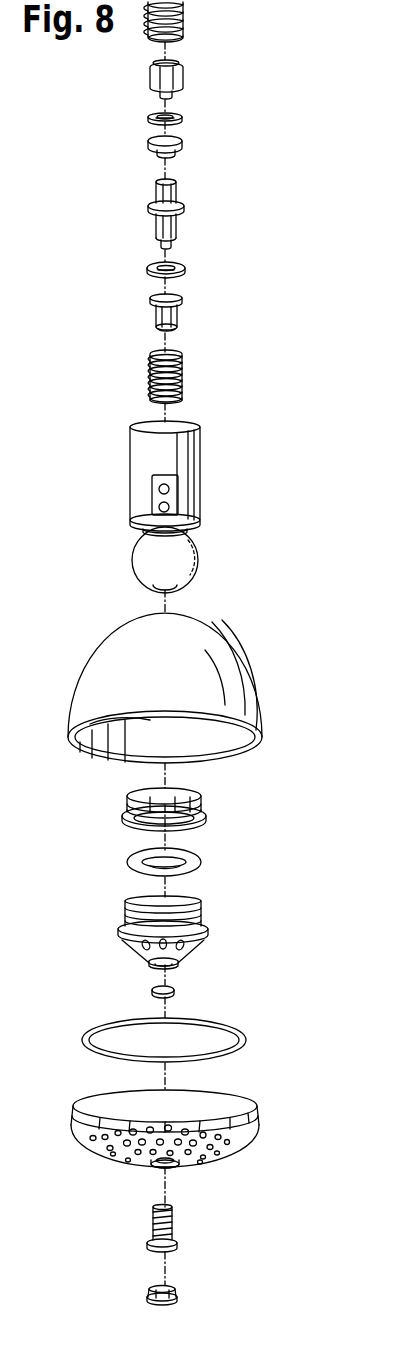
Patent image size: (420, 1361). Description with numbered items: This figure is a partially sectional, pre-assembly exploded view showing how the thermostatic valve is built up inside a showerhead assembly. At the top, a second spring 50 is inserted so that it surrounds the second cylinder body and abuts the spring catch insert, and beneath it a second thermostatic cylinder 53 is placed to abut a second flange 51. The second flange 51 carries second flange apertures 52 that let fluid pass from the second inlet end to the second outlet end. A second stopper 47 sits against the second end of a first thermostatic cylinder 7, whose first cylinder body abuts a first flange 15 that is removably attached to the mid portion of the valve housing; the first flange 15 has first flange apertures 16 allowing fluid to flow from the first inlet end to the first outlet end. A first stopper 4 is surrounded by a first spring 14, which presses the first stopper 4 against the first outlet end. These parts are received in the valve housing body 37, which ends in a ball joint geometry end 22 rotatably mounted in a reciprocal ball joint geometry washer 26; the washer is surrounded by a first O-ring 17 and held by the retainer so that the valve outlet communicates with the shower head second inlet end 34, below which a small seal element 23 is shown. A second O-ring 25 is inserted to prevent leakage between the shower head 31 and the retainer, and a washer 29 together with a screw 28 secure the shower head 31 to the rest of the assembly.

The second spring 50 is at (183, 26).
The second thermostatic cylinder 53 is at (183, 83).
The second flange 51 is at (183, 115).
The second flange apertures 52 is at (178, 120).
The second stopper 47 is at (183, 145).
The first thermostatic cylinder 7 is at (184, 206).
The first flange 15 is at (171, 264).
The first flange apertures 16 is at (180, 274).
The first stopper 4 is at (178, 318).
The first spring 14 is at (183, 372).
The housing 37 is at (200, 462).
The ball joint geometry end 22 is at (196, 546).
The reciprocal ball joint geometry washer 26 is at (205, 818).
The first O-ring 17 is at (201, 862).
The shower head second inlet end 34 is at (209, 901).
The seal 23 is at (175, 991).
The second O-ring 25 is at (202, 1060).
The shower head 31 is at (226, 1145).
The screw 28 is at (174, 1226).
The washer 29 is at (178, 1294).